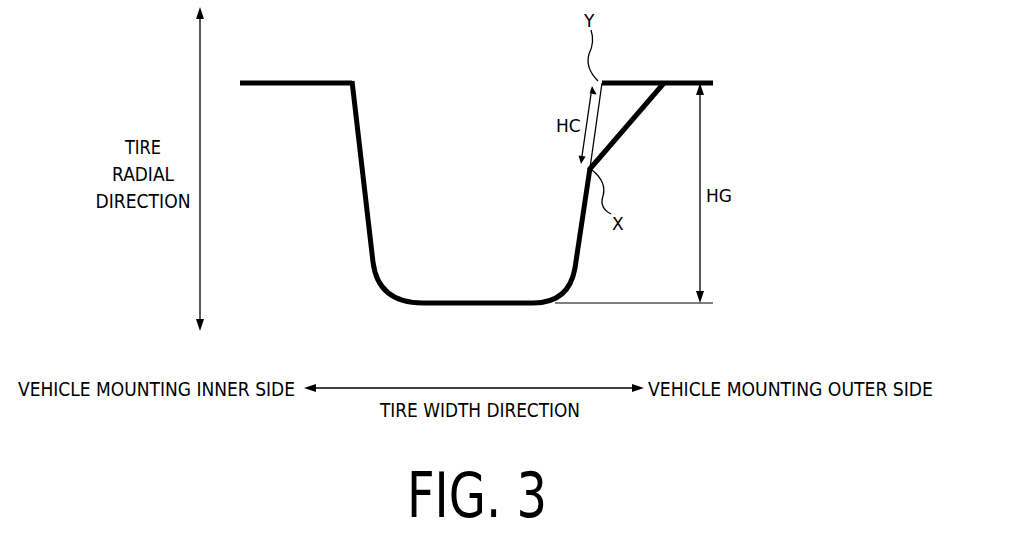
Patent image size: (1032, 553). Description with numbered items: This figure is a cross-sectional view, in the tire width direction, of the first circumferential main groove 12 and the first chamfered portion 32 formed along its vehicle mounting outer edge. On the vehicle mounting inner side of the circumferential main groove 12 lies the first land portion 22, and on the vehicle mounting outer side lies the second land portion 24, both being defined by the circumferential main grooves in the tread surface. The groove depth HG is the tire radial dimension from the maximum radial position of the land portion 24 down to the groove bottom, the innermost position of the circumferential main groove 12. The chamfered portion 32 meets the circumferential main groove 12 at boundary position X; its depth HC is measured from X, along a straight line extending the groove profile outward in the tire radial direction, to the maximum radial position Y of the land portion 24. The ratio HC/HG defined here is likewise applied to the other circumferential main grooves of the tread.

The first land portion 22 is at (283, 206).
The first circumferential main groove 12 is at (466, 204).
The second land portion 24 is at (649, 206).
The first chamfered portion 32 is at (624, 108).